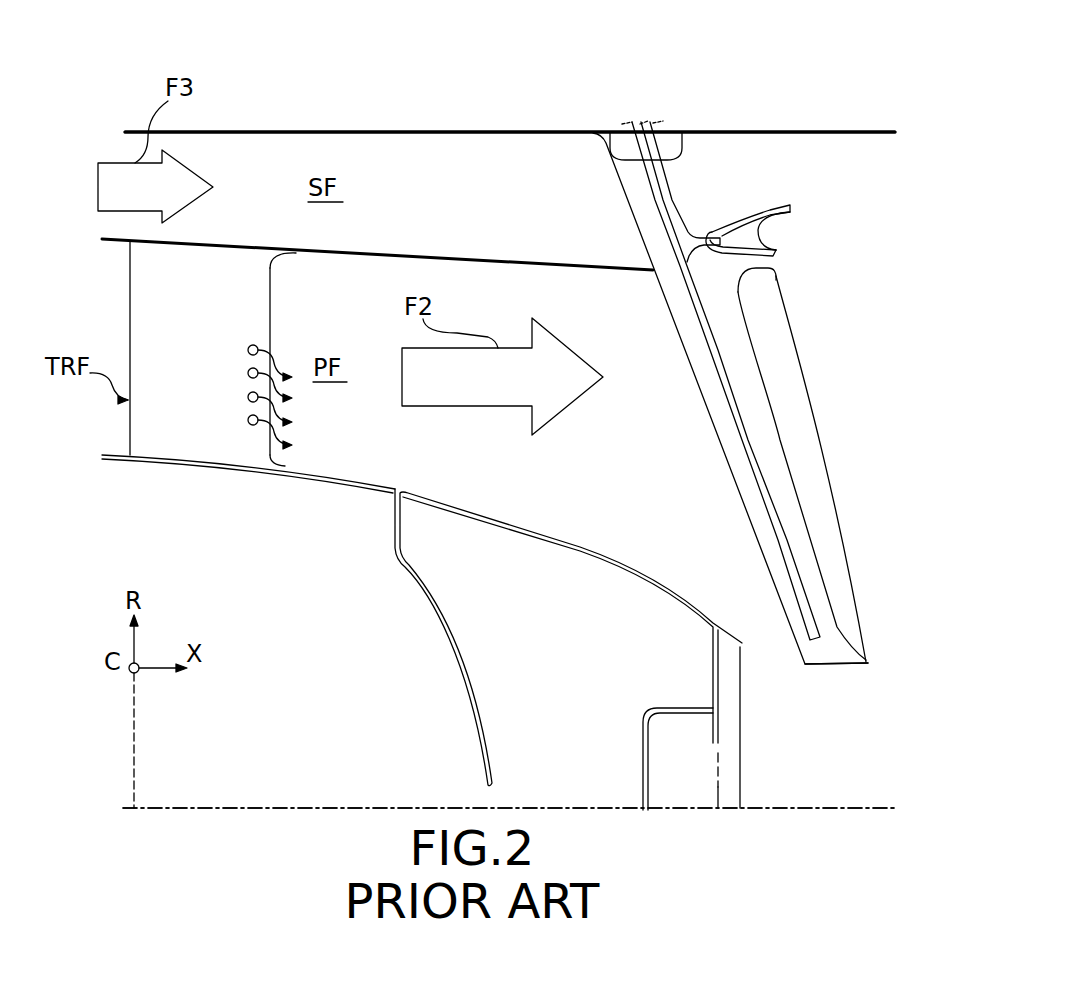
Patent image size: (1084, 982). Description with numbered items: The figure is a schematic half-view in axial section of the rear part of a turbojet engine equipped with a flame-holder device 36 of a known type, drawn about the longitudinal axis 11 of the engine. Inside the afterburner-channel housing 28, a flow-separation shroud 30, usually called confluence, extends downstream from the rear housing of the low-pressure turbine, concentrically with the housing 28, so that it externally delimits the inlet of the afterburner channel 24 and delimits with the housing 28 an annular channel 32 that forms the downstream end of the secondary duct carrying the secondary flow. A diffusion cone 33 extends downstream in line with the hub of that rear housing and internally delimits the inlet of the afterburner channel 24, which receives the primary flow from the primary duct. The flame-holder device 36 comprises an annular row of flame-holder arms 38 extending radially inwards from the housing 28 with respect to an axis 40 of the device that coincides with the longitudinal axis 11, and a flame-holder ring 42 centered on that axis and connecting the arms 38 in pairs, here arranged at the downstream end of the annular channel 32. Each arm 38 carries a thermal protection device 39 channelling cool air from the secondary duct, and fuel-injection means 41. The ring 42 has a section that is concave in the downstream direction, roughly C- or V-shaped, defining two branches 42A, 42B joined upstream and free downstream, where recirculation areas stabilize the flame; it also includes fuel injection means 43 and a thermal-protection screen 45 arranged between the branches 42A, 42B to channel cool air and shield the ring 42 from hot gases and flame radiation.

The afterburner-channel housing 28 is at (335, 132).
The flow-separation shroud 30 is at (376, 253).
The annular channel 32 is at (541, 206).
The afterburner channel 24 is at (497, 469).
The diffusion cone 33 is at (580, 545).
The longitudinal axis 11 is at (183, 808).
The axis of the device 40 is at (509, 764).
The fuel-injection means 41 is at (633, 158).
The fuel injection means 43 is at (745, 222).
The flame-holder ring 42 is at (791, 176).
The branch 42A is at (780, 203).
The branch 42B is at (786, 276).
The thermal-protection screen 45 is at (763, 232).
The flame-holder device 36 is at (851, 459).
The flame-holder arm 38 is at (818, 447).
The thermal protection device 39 is at (792, 482).